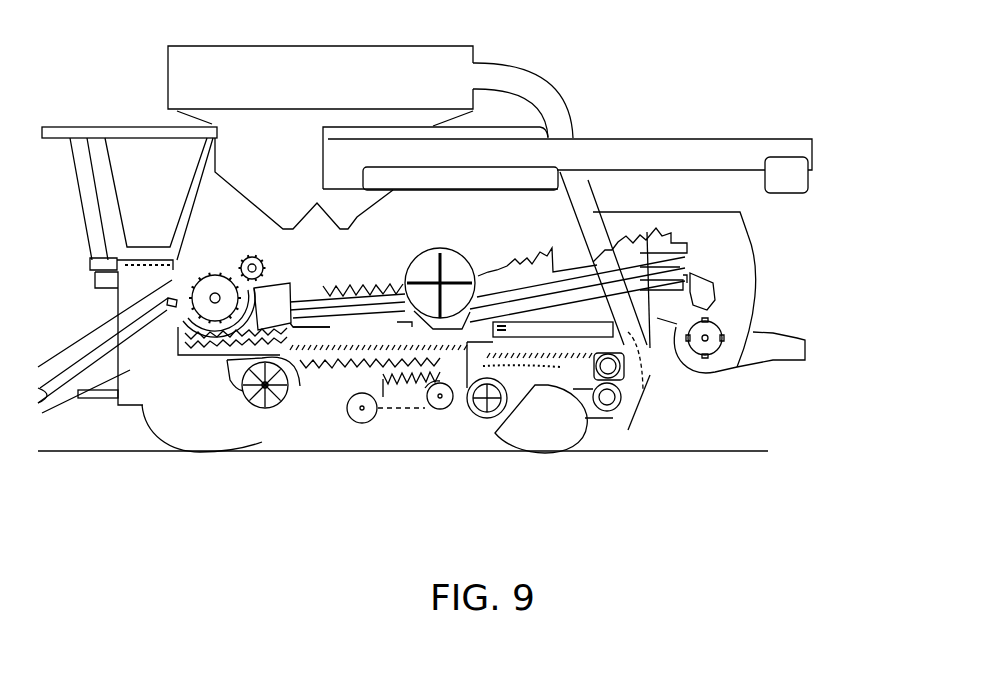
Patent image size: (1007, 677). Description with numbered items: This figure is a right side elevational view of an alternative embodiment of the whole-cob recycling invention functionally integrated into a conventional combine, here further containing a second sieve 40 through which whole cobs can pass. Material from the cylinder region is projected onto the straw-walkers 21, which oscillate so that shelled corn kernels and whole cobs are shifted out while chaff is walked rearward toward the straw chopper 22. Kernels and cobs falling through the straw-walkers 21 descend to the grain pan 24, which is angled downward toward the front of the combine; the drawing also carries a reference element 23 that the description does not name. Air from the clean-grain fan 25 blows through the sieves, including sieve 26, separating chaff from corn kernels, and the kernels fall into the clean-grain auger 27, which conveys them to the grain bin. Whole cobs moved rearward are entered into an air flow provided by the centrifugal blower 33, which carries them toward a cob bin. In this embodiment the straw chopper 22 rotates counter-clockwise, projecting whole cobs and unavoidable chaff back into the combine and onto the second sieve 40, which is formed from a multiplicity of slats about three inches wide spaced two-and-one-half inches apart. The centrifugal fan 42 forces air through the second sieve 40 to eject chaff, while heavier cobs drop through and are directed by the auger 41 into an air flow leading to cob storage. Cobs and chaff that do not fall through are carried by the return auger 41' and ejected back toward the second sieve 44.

The straw-walkers 21 is at (627, 335).
The straw chopper 22 is at (708, 342).
The row divider rods 23 is at (600, 287).
The grain pan 24 is at (601, 323).
The clean-grain fan 25 is at (232, 393).
The sieve 26 is at (332, 373).
The clean-grain auger 27 is at (348, 422).
The centrifugal blower 33 is at (462, 258).
The second sieve 40 is at (598, 348).
The auger 41 is at (508, 459).
The return auger 41' is at (718, 436).
The centrifugal fan 42 is at (462, 415).
The second sieve 44 is at (574, 325).